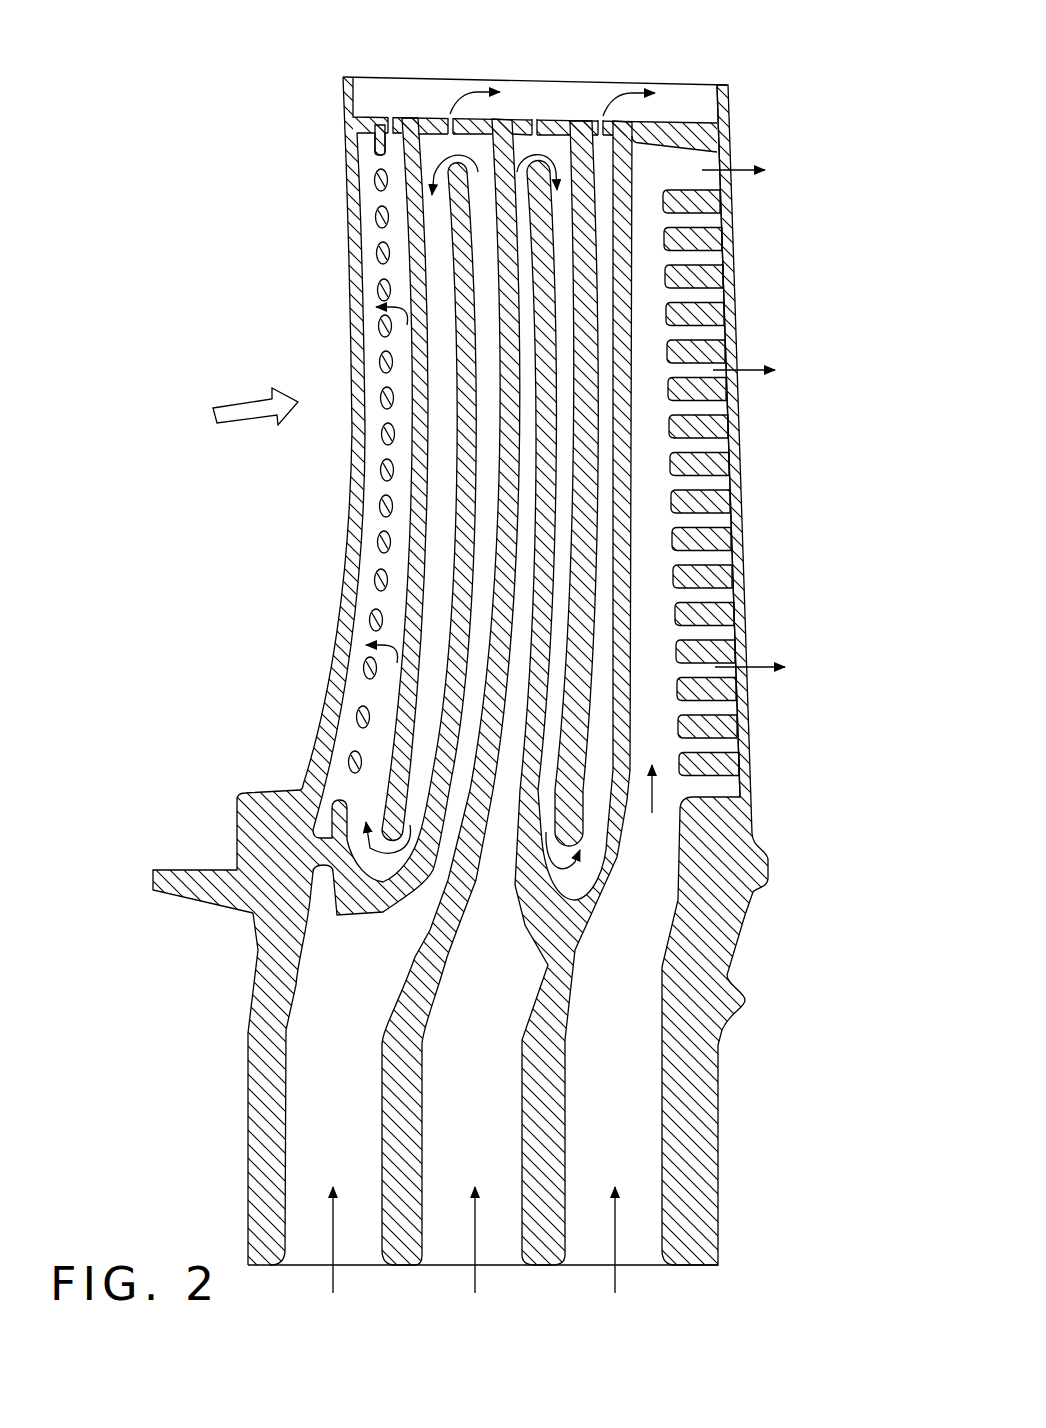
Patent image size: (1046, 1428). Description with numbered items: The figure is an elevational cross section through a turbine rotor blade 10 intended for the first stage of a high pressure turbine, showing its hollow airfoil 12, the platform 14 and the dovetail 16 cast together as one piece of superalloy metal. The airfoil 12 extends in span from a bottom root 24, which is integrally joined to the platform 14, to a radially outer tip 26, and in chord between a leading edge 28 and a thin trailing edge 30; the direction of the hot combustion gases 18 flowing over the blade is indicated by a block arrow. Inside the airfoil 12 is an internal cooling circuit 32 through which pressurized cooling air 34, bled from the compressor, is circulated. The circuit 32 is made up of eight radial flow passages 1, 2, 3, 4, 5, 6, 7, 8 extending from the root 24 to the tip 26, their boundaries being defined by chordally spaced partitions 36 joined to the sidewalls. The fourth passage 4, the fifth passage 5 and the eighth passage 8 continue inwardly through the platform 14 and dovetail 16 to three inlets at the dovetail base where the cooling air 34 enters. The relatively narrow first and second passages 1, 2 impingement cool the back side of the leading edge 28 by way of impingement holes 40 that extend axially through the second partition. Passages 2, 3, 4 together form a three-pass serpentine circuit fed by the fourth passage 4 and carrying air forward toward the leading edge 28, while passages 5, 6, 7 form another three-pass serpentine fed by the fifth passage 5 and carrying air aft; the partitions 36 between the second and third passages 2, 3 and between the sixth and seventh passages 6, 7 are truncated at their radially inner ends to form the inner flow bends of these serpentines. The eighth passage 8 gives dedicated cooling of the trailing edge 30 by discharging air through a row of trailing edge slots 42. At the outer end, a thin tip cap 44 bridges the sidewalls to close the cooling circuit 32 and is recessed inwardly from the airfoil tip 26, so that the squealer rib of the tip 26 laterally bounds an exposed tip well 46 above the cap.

The turbine rotor blade 10 is at (755, 73).
The airfoil 12 is at (340, 152).
The platform 14 is at (753, 853).
The dovetail 16 is at (718, 1133).
The combustion gases 18 is at (243, 395).
The root 24 is at (300, 790).
The airfoil tip 26 is at (605, 80).
The leading edge 28 is at (352, 216).
The trailing edge 30 is at (735, 330).
The internal cooling circuit 32 is at (642, 263).
The cooling air 34 is at (742, 370).
The partitions 36 is at (503, 868).
The impingement holes 40 is at (378, 550).
The trailing edge slots 42 is at (720, 295).
The tip cap 44 is at (413, 117).
The tip well 46 is at (378, 88).
The first passage 1 is at (373, 297).
The second passage 2 is at (403, 340).
The third passage 3 is at (443, 373).
The fourth passage 4 is at (487, 413).
The fifth passage 5 is at (527, 467).
The sixth passage 6 is at (567, 457).
The seventh passage 7 is at (607, 528).
The eighth passage 8 is at (658, 593).